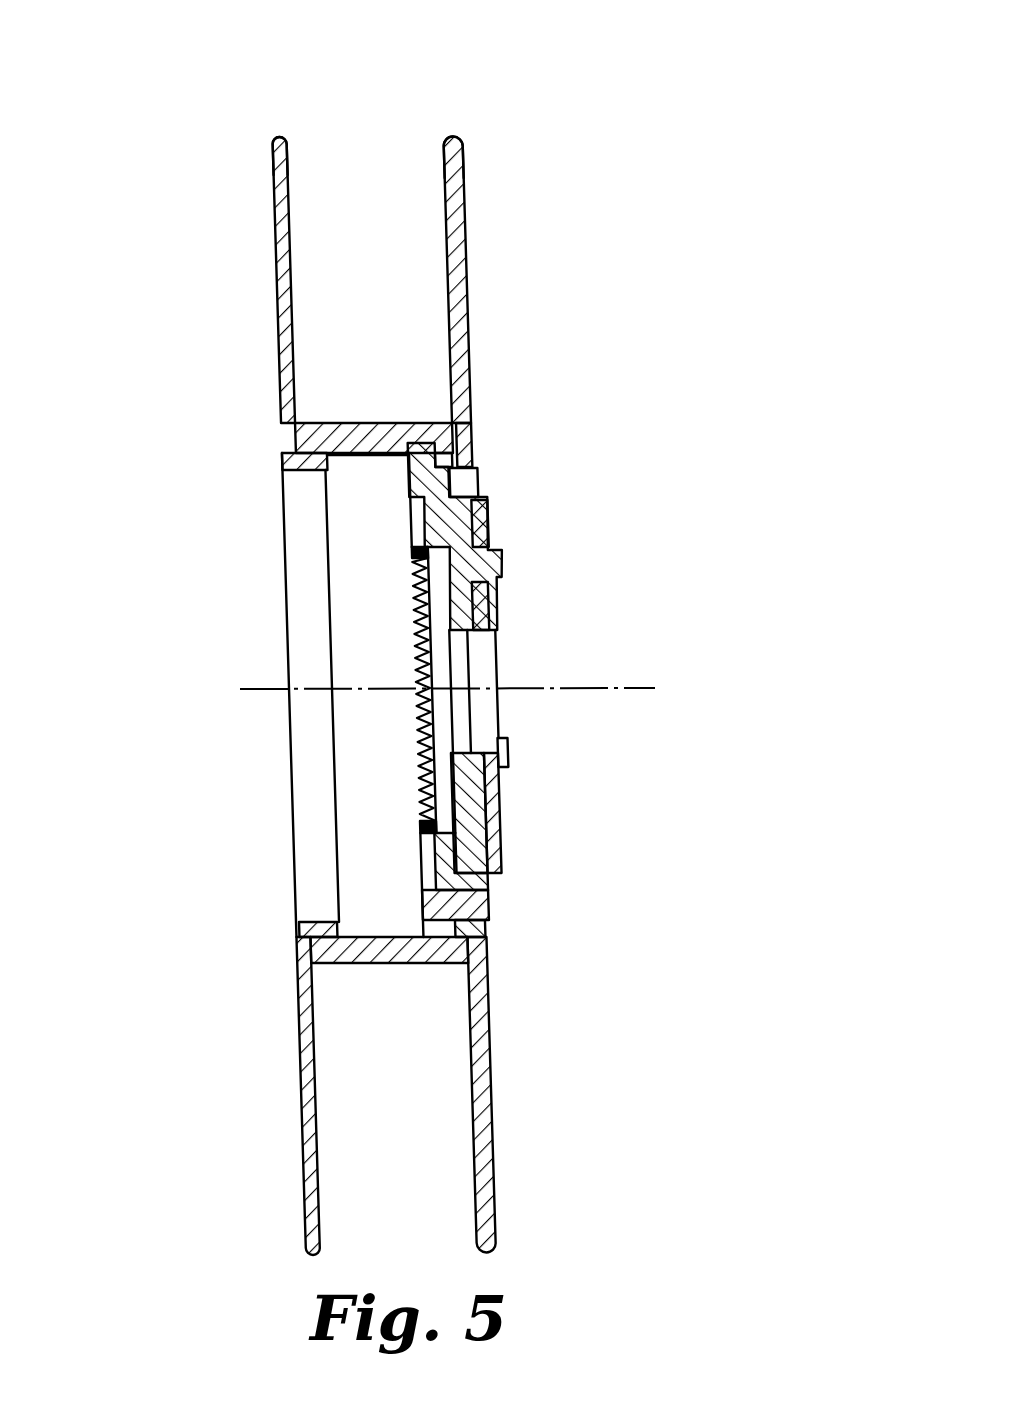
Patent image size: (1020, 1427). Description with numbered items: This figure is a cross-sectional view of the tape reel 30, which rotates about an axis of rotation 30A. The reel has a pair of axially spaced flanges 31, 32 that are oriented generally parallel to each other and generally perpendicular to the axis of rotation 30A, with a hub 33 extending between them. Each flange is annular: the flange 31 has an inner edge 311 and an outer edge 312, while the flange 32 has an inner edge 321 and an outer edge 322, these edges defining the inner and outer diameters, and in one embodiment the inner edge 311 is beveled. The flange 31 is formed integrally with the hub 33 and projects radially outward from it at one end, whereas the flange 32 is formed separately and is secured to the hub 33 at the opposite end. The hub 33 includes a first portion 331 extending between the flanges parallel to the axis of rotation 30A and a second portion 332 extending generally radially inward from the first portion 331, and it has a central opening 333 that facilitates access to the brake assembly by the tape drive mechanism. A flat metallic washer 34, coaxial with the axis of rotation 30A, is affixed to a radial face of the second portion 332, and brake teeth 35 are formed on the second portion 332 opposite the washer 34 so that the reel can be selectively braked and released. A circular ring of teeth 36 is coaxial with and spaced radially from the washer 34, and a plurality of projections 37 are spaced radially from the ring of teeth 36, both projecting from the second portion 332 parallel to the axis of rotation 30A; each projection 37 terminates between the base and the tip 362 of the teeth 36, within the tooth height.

The tape reel 30 is at (574, 76).
The axis of rotation 30A is at (468, 659).
The flange 31 is at (468, 287).
The inner edge 311 is at (478, 438).
The outer edge 312 is at (453, 137).
The flange 32 is at (283, 286).
The inner edge 321 is at (300, 471).
The outer edge 322 is at (279, 137).
The hub 33 is at (386, 423).
The first portion 331 is at (375, 935).
The second portion 332 is at (443, 862).
The central opening 333 is at (498, 633).
The flat metallic washer 34 is at (497, 813).
The brake teeth 35 is at (415, 739).
The circular ring of teeth 36 is at (484, 904).
The projections 37 is at (469, 929).
The tip 362 is at (482, 483).